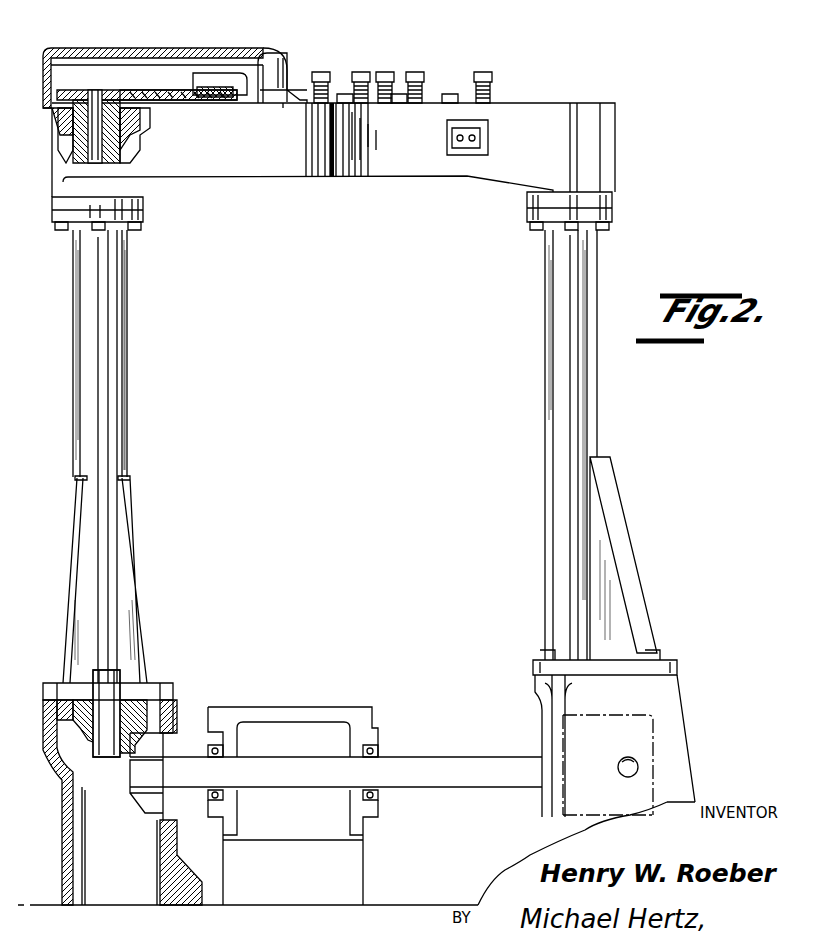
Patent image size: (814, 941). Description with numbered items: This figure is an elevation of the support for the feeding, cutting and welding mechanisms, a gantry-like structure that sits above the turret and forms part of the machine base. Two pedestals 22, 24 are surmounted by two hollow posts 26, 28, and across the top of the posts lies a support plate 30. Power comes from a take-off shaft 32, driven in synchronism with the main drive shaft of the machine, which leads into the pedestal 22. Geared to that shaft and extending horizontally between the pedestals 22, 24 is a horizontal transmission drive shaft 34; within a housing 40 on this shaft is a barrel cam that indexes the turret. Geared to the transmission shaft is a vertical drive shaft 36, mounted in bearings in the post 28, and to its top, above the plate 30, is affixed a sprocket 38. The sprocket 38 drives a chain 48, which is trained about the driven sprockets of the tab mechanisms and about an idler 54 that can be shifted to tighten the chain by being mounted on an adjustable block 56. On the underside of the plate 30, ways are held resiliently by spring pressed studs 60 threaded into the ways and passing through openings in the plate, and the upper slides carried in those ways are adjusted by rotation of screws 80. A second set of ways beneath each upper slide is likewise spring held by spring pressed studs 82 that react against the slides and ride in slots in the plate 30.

The pedestal 22 is at (542, 836).
The pedestal 24 is at (58, 812).
The hollow post 26 is at (548, 338).
The hollow post 28 is at (115, 372).
The support plate 30 is at (448, 176).
The take-off shaft 32 is at (618, 768).
The horizontal transmission drive shaft 34 is at (428, 756).
The vertical drive shaft 36 is at (140, 142).
The sprocket 38 is at (112, 86).
The housing 40 is at (293, 706).
The chain 48 is at (164, 88).
The idler 54 is at (222, 97).
The adjustable block 56 is at (246, 70).
The spring pressed studs 60 is at (500, 72).
The screws 80 is at (482, 137).
The spring pressed studs 82 is at (450, 92).